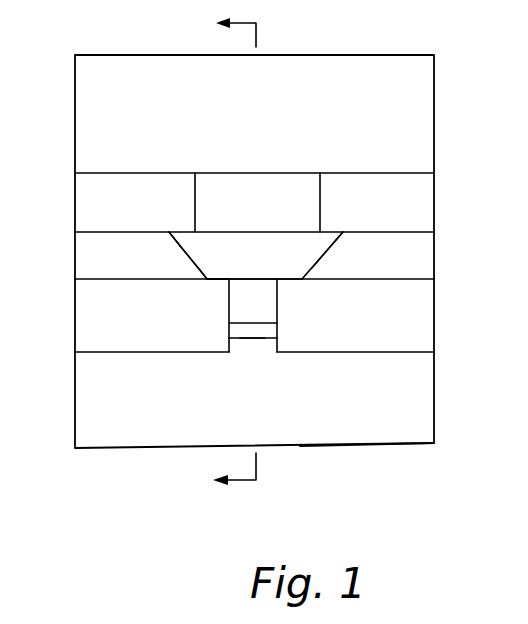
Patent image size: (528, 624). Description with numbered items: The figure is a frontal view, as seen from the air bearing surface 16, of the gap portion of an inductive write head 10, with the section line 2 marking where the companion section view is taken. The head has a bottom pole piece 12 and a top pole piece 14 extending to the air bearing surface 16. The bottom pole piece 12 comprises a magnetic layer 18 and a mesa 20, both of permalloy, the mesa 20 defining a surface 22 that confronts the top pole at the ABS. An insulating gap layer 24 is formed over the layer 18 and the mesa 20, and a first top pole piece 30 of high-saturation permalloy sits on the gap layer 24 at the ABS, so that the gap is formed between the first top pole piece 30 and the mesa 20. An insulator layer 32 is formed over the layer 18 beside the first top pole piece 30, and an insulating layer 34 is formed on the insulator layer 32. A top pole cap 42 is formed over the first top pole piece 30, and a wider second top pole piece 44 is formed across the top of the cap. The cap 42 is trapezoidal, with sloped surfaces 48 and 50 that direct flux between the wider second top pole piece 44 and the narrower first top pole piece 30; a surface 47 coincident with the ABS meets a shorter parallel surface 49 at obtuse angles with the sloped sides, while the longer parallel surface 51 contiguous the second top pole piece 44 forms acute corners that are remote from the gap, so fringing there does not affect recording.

The section line 2— 2 is at (220, 256).
The write head 10 is at (163, 495).
The bottom pole piece 12 is at (442, 389).
The top pole piece 14 is at (440, 70).
The air bearing surface 16 is at (395, 250).
The layer 18 is at (367, 446).
The mesa 20 is at (280, 343).
The surface 22 is at (237, 332).
The insulating gap layer 24 is at (252, 338).
The first top pole piece 30 is at (278, 304).
The insulator layer 32 is at (417, 288).
The insulating layer 34 is at (418, 265).
The top pole cap 42 is at (187, 254).
The second top pole piece 44 is at (257, 195).
The surface coincident with the ABS 47 is at (255, 266).
The sloped surface 48 is at (174, 240).
The shorter parallel surface 49 is at (226, 282).
The sloped surface 50 is at (322, 257).
The longer parallel surface 51 is at (330, 228).